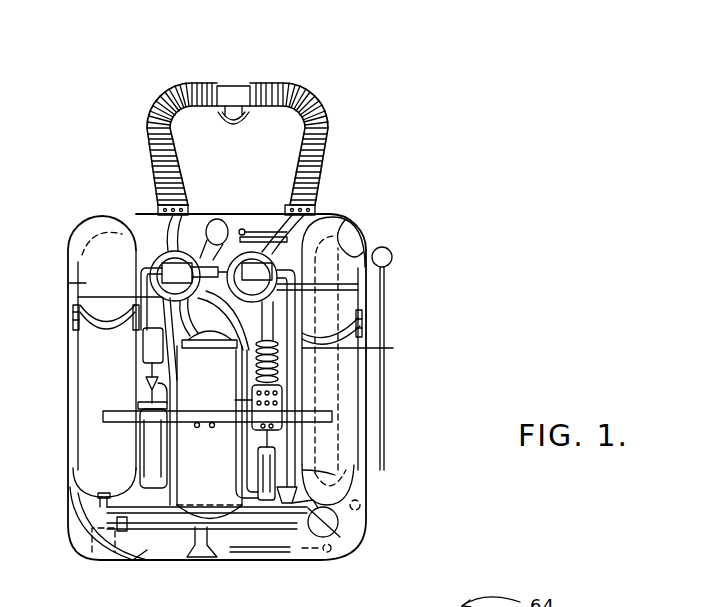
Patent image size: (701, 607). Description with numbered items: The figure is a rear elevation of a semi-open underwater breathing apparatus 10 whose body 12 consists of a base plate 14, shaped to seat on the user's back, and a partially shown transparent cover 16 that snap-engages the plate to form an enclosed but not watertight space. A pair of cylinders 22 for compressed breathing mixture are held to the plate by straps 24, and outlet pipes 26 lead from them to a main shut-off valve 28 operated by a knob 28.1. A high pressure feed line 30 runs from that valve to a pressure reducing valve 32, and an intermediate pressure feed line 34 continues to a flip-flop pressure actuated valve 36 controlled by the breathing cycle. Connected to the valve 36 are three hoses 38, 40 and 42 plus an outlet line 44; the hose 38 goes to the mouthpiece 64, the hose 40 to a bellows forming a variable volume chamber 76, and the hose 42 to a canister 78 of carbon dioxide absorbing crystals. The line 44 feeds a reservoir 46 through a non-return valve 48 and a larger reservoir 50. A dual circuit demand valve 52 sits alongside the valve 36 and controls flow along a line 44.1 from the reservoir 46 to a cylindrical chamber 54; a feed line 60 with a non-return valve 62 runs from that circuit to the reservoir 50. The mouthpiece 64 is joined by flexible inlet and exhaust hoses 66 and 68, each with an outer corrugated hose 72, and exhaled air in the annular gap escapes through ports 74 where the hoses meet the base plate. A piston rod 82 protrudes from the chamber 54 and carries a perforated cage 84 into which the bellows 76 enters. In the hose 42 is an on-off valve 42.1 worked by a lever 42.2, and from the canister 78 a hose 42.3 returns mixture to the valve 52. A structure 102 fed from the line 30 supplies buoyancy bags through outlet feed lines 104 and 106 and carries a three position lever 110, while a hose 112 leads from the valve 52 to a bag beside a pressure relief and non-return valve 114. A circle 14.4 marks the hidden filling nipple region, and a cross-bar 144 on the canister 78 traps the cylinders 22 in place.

The breathing apparatus 10 is at (443, 257).
The body 12 is at (62, 377).
The base plate 14 is at (150, 558).
The circle marking filling nipple region 14.4 is at (190, 556).
The transparent cover 16 is at (97, 220).
The cylinders 22 is at (80, 283).
The straps 24 is at (88, 326).
The outlet pipes 26 is at (78, 500).
The main shut-off valve 28 is at (98, 522).
The knob 28.1 is at (94, 553).
The high pressure feed line 30 is at (273, 532).
The pressure reducing valve 32 is at (378, 527).
The intermediate pressure feed line 34 is at (282, 463).
The pressure actuated valve 36 is at (330, 285).
The hose 38 is at (320, 226).
The hose 40 is at (222, 310).
The hose 42 is at (285, 312).
The on-off valve 42.1 is at (234, 560).
The lever 42.2 is at (290, 557).
The hose 42.3 is at (76, 298).
The outlet line 44 is at (236, 216).
The line 44.1 is at (250, 467).
The reservoir 46 is at (143, 355).
The non-return valve 48 is at (147, 383).
The larger reservoir 50 is at (112, 450).
The demand valve 52 is at (160, 248).
The chamber 54 is at (342, 488).
The feed line 60 is at (166, 250).
The non-return valve 62 is at (206, 218).
The mouthpiece 64 is at (246, 81).
The inlet hose 66 is at (138, 112).
The exhaust hose 68 is at (332, 139).
The outer corrugated hose 72 is at (180, 93).
The ports 74 is at (194, 212).
The variable volume chamber 76 is at (330, 395).
The canister 78 is at (218, 488).
The piston rod 82 is at (256, 440).
The perforated cage 84 is at (242, 408).
The structure 102 is at (355, 547).
The outlet feed line 104 is at (278, 442).
The outlet feed line 106 is at (307, 430).
The three position lever 110 is at (362, 505).
The hose 112 is at (163, 247).
The pressure relief and non-return valve 114 is at (236, 225).
The cross-bar 144 is at (103, 418).